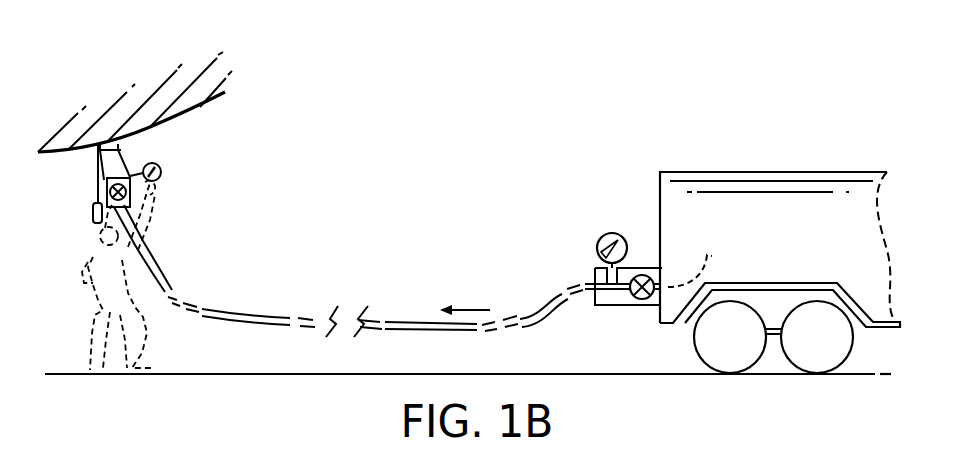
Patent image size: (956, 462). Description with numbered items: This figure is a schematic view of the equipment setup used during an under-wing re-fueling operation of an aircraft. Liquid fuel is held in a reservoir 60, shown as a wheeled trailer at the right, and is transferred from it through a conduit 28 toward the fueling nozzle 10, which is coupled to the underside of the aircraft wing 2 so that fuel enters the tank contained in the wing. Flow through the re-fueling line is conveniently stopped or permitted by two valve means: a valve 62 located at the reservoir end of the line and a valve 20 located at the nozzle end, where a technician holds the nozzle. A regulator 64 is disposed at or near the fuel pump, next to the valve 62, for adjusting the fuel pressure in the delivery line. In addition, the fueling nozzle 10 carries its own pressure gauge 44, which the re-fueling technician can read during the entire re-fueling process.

The aircraft wing 2 is at (235, 82).
The fueling nozzle 10 is at (128, 153).
The valve means 20 is at (98, 191).
The pressure gauge 44 is at (161, 174).
The conduit 28 is at (390, 320).
The reservoir 60 is at (738, 168).
The regulator 64 is at (603, 235).
The valve means 62 is at (635, 298).